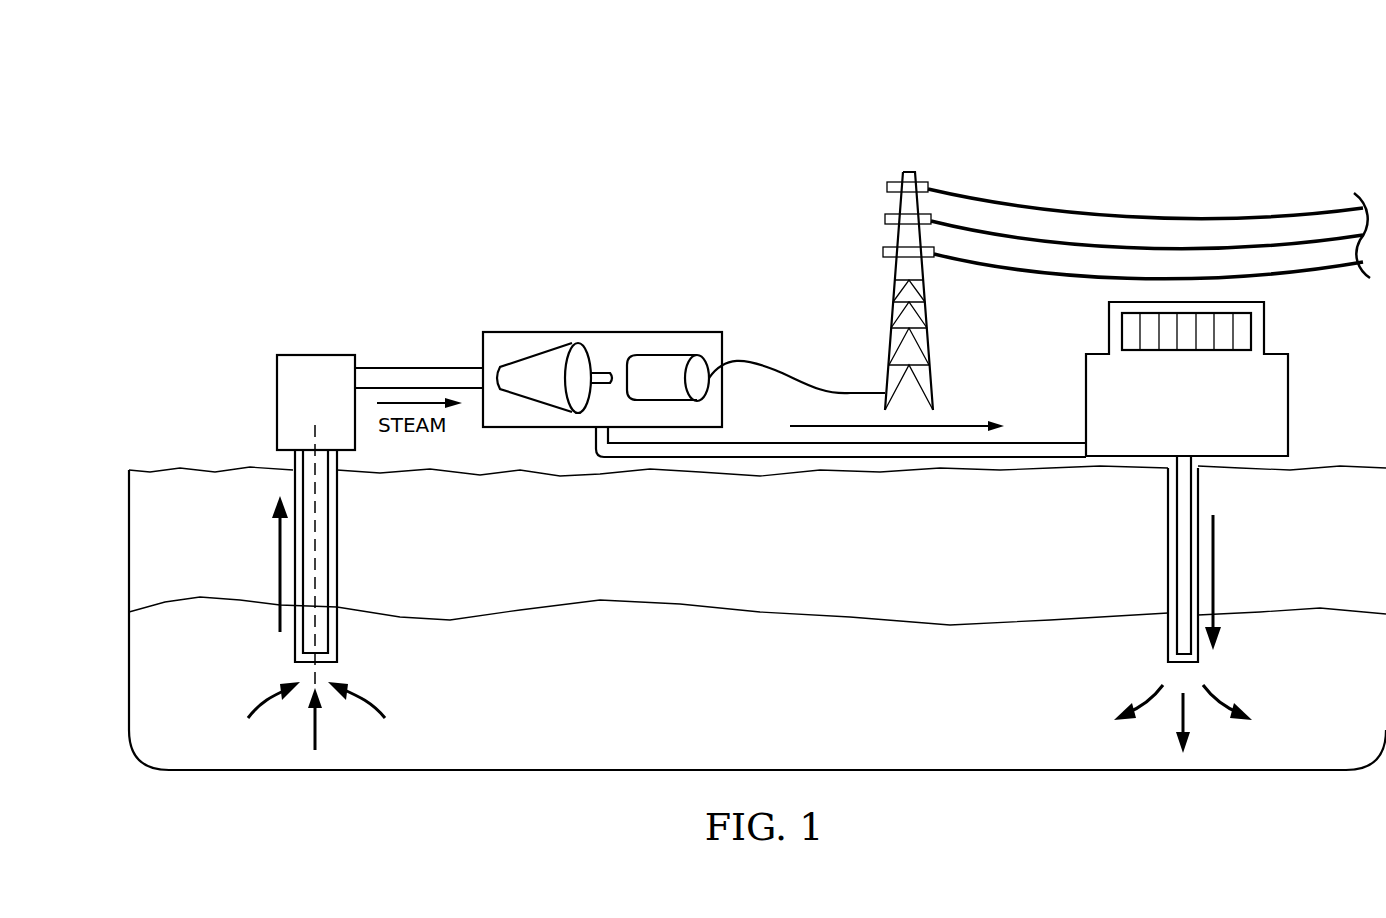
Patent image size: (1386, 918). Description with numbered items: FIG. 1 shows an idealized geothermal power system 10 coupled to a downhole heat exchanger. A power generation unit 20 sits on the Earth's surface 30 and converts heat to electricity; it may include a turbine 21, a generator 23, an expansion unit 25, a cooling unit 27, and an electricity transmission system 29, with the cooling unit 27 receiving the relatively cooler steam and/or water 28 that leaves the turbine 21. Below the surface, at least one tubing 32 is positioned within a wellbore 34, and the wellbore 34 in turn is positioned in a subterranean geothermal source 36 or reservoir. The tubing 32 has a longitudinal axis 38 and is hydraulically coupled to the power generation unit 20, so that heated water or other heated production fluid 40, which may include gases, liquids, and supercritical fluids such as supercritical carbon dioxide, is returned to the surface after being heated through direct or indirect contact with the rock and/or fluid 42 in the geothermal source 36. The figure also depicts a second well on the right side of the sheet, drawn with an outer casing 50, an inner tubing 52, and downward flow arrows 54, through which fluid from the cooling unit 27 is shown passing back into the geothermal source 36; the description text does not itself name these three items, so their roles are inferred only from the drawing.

The geothermal power system 10 is at (240, 140).
The power generation unit 20 is at (684, 282).
The turbine 21 is at (540, 368).
The generator 23 is at (660, 368).
The expansion unit 25 is at (316, 355).
The cooling unit 27 is at (1086, 372).
The relatively cooler steam and/or water 28 is at (945, 427).
The electricity transmission system 29 is at (945, 178).
The Earth's surface 30 is at (172, 470).
The tubing 32 is at (330, 543).
The wellbore 34 is at (338, 641).
The subterranean geothermal source 36 is at (603, 735).
The longitudinal axis 38 is at (312, 626).
The heated production fluid 40 is at (278, 556).
The rock and/or fluid 42 is at (360, 720).
The injection well casing 50 is at (1167, 545).
The injection tubing 52 is at (1198, 483).
The injected fluid flow 54 is at (1214, 578).